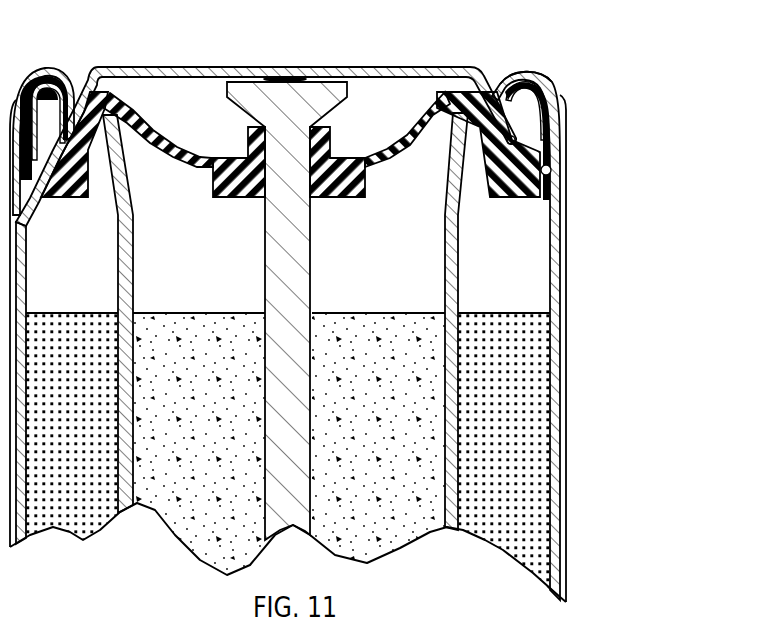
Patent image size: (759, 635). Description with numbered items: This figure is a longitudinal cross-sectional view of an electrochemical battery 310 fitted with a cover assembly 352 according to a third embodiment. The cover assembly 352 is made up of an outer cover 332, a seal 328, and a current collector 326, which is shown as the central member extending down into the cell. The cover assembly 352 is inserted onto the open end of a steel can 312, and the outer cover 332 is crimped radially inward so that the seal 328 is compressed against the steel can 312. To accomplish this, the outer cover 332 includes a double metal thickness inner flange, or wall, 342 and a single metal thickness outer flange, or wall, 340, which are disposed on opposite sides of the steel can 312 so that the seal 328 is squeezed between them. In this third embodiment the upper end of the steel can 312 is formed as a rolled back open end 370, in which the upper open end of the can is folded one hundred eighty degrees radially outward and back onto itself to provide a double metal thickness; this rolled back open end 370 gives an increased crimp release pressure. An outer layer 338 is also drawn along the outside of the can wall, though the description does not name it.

The battery 310 is at (668, 235).
The steel can 312 is at (557, 422).
The current collector 326 is at (313, 262).
The seal 328 is at (150, 117).
The outer cover 332 is at (328, 67).
The outer label layer 338 is at (567, 473).
The single metal thickness outer flange 340 is at (557, 133).
The double metal thickness inner flange 342 is at (516, 140).
The cover assembly 352 is at (543, 53).
The rolled back open end 370 is at (543, 87).